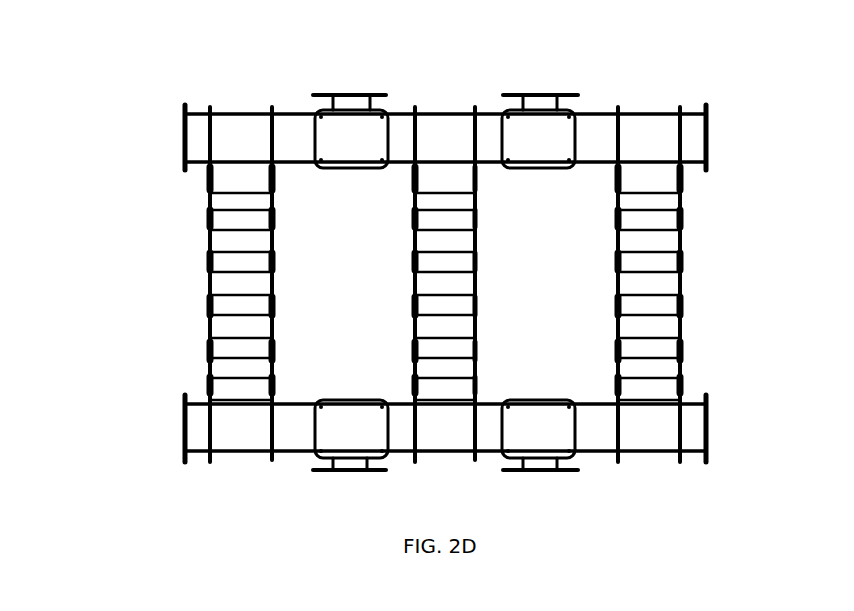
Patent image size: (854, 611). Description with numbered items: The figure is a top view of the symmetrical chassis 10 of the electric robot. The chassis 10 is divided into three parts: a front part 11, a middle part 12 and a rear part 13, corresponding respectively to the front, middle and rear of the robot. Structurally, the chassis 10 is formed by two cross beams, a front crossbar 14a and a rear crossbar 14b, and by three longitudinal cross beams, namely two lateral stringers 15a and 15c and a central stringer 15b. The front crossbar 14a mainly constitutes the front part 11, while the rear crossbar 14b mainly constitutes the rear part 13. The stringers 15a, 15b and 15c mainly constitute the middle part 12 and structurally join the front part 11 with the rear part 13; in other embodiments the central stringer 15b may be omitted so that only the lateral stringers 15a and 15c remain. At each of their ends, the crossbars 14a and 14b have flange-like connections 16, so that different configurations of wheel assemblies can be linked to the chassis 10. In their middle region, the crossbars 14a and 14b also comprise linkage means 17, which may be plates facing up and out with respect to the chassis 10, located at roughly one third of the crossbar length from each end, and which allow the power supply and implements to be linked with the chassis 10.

The symmetrical chassis 10 is at (216, 80).
The front part 11 is at (113, 385).
The middle part 12 is at (113, 185).
The rear part 13 is at (113, 105).
The front crossbar 14a is at (295, 420).
The rear crossbar 14b is at (290, 137).
The lateral stringer 15a is at (209, 240).
The central stringer 15b is at (477, 285).
The lateral stringer 15c is at (682, 283).
The flange-like connections 16 is at (184, 117).
The linkage means 17 is at (520, 95).